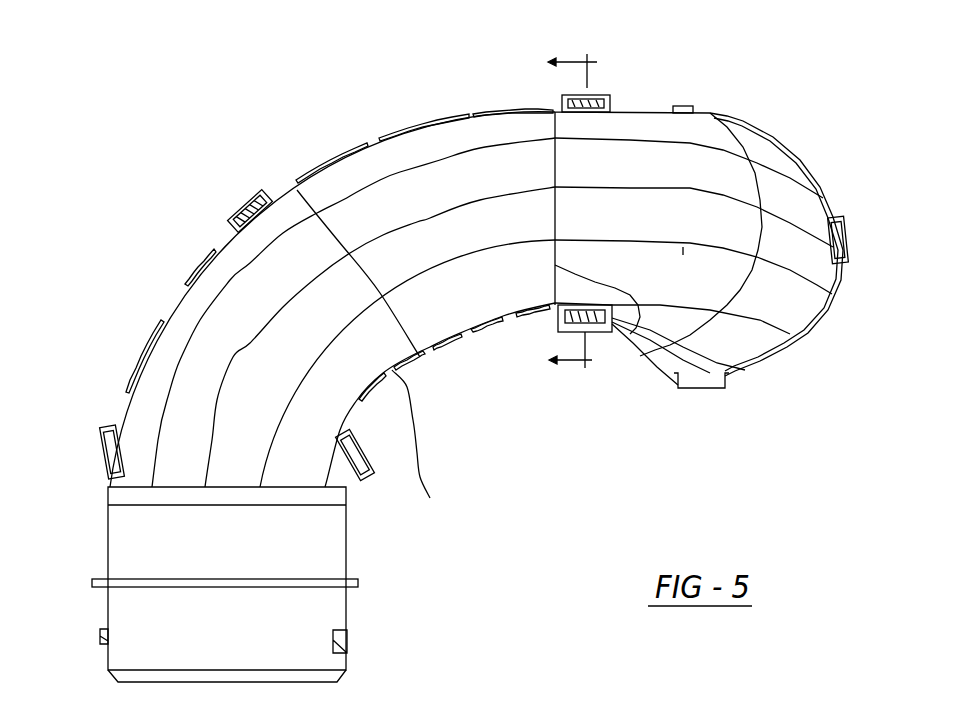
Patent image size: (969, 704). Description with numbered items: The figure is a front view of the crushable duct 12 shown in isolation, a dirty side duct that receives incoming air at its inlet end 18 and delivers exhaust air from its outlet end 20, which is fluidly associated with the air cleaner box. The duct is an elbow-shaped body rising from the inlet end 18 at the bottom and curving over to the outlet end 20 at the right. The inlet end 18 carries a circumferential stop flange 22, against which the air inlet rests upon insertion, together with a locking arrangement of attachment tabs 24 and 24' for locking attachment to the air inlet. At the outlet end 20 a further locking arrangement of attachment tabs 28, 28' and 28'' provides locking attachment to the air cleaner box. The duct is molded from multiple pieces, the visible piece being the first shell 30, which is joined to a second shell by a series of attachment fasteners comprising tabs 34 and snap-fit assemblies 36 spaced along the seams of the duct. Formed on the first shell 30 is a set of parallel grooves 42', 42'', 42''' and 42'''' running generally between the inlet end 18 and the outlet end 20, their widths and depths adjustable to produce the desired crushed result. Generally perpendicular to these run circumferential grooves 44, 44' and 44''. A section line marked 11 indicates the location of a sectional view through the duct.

The crushable duct 12 is at (168, 98).
The inlet end 18 is at (332, 613).
The outlet end 20 is at (758, 368).
The circumferential stop flange 22 is at (360, 587).
The attachment tab 24 is at (85, 665).
The attachment tab 24' is at (391, 664).
The attachment tab 28 is at (720, 417).
The attachment tab 28' is at (854, 287).
The attachment tab 28'' is at (730, 80).
The first shell 30 is at (420, 440).
The tab 34 is at (175, 283).
The snap-fit assembly 36 is at (243, 202).
The parallel groove 42' is at (487, 277).
The parallel groove 42'' is at (519, 272).
The parallel groove 42''' is at (546, 300).
The parallel groove 42'''' is at (557, 412).
The circumferential groove 44 is at (354, 220).
The circumferential groove 44' is at (593, 261).
The circumferential groove 44'' is at (690, 375).
The section line 11- 11 is at (556, 214).